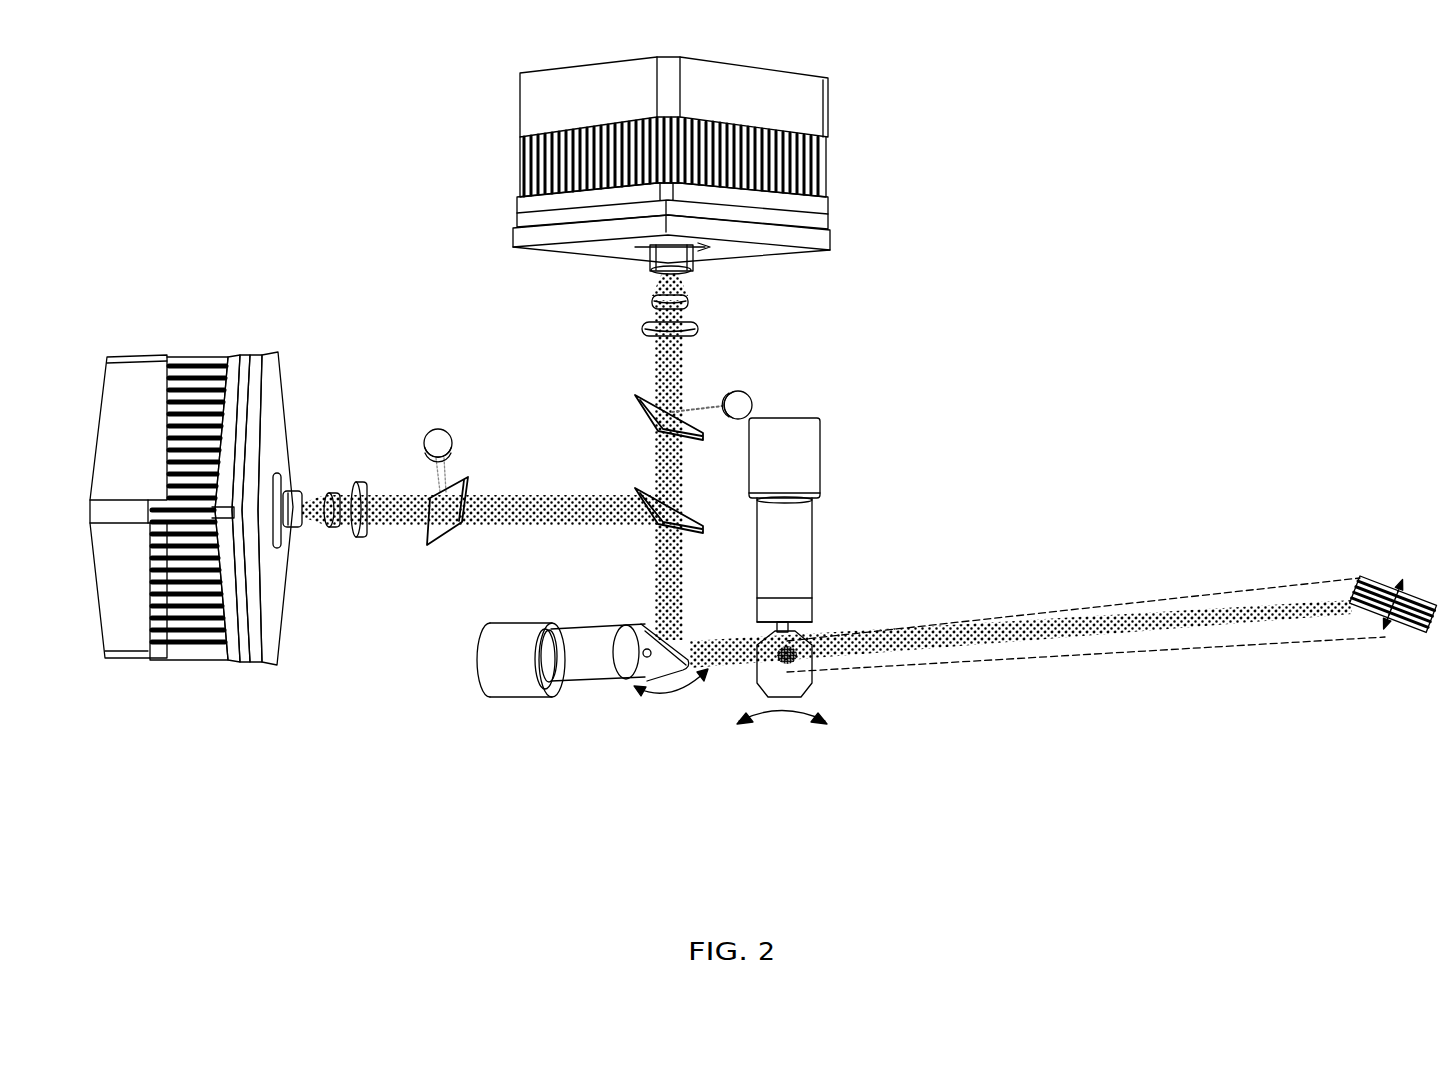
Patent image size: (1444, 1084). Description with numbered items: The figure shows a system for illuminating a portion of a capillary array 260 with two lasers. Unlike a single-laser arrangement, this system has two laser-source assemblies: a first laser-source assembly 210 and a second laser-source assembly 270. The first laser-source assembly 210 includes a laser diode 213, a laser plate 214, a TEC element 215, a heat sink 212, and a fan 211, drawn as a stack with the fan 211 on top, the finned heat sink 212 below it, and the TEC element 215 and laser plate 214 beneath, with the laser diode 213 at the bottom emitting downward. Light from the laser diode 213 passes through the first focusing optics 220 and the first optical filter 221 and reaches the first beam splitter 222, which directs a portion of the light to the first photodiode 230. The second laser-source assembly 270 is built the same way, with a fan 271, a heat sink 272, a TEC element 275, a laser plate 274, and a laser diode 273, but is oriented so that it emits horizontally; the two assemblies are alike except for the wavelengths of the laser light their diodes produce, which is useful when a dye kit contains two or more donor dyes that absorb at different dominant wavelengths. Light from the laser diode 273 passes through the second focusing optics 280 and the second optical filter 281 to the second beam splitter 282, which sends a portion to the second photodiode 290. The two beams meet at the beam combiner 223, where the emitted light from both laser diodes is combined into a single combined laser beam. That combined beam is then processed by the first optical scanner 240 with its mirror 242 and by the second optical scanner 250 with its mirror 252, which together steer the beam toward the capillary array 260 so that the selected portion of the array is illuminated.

The first laser-source assembly 210 is at (667, 176).
The fan 211 is at (538, 98).
The heat sink 212 is at (533, 178).
The laser diode 213 is at (652, 262).
The laser plate 214 is at (512, 238).
The TEC element 215 is at (517, 222).
The first focusing optics 220 is at (690, 300).
The first optical filter 221 is at (700, 331).
The first beam splitter 222 is at (648, 397).
The beam combiner 223 is at (648, 490).
The first photodiode 230 is at (742, 404).
The first optical scanner 240 is at (520, 705).
The mirror 242 is at (677, 665).
The second optical scanner 250 is at (832, 447).
The mirror 252 is at (797, 684).
The capillary array 260 is at (1370, 580).
The second laser-source assembly 270 is at (212, 535).
The fan 271 is at (122, 375).
The heat sink 272 is at (193, 375).
The laser diode 273 is at (300, 488).
The laser plate 274 is at (278, 620).
The TEC element 275 is at (250, 663).
The second focusing optics 280 is at (330, 532).
The second optical filter 281 is at (362, 540).
The second beam splitter 282 is at (452, 530).
The second photodiode 290 is at (432, 440).